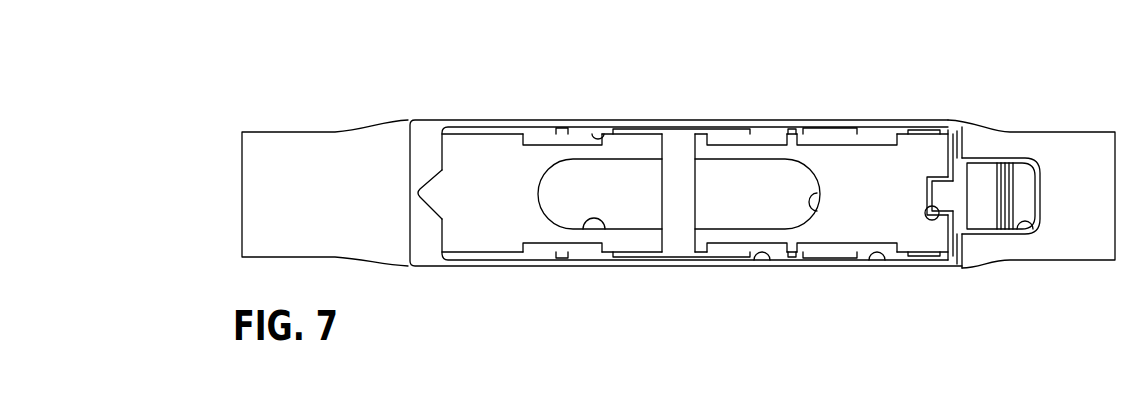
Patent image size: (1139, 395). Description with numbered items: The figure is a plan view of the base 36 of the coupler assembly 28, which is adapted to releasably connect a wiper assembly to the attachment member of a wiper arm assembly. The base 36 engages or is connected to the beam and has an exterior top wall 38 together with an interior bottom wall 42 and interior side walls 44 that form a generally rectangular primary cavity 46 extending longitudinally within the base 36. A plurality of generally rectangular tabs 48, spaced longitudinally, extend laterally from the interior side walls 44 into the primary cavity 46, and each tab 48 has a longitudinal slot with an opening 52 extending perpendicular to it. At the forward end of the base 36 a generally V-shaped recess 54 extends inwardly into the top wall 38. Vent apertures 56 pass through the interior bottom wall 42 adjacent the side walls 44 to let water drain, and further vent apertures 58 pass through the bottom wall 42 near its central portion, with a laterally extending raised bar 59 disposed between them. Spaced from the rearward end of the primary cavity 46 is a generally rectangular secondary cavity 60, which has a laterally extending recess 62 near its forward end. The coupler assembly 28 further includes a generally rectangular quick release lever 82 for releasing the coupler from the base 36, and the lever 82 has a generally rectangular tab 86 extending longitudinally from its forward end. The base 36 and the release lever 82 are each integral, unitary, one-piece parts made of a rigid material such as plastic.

The coupler assembly 28 is at (460, 100).
The base 36 is at (989, 121).
The exterior top wall 38 is at (1010, 130).
The interior bottom wall 42 is at (488, 177).
The interior side walls 44 is at (587, 122).
The primary cavity 46 is at (865, 132).
The tabs 48 is at (511, 132).
The opening 52 is at (572, 128).
The recess 54 is at (426, 180).
The vent apertures 56 is at (613, 126).
The vent apertures 58 is at (815, 211).
The raised bar 59 is at (676, 236).
The secondary cavity 60 is at (1027, 233).
The recess 62 is at (924, 218).
The quick release lever 82 is at (1041, 170).
The tab 86 is at (942, 196).